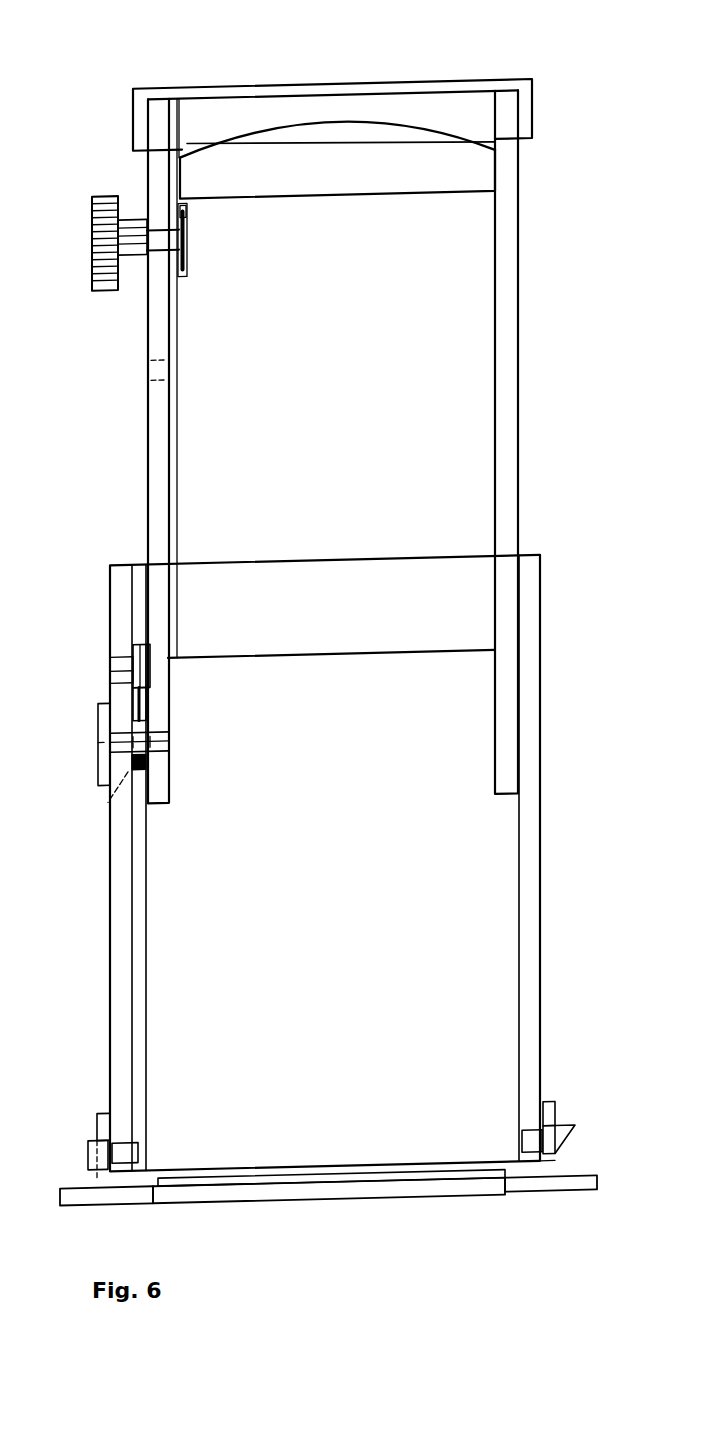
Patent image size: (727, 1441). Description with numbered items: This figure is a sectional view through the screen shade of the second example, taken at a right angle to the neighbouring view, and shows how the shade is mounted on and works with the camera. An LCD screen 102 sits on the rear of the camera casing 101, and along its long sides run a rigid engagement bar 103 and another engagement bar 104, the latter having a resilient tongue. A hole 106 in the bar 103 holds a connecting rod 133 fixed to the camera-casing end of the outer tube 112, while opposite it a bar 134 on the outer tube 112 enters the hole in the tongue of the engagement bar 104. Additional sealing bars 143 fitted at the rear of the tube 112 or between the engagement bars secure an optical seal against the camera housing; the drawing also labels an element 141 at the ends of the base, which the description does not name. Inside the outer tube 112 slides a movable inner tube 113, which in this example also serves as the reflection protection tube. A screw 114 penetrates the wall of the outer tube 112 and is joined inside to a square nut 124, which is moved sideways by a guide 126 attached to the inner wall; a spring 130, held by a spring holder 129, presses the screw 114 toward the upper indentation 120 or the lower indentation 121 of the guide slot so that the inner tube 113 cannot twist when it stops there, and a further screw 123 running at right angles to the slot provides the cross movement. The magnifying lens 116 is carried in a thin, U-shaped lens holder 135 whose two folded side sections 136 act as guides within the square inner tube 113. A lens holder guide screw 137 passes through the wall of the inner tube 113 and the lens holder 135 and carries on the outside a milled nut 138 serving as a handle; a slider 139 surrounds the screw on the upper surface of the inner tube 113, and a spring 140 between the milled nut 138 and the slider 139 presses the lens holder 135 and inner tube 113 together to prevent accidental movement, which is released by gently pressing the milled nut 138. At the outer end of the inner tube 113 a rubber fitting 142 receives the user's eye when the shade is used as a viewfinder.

The camera casing 101 is at (555, 1190).
The LCD screen 102 is at (362, 1193).
The engagement bar 103 is at (97, 1118).
The engagement bar 104 is at (557, 1105).
The hole 106 is at (90, 1138).
The outer tube 112 is at (545, 567).
The inner tube 113 is at (527, 478).
The screw 114 is at (98, 712).
The magnifying lens 116 is at (470, 168).
The upper indentation 120 is at (143, 372).
The lower indentation 121 is at (130, 752).
The screw 123 is at (125, 757).
The square nut 124 is at (130, 705).
The guide 126 is at (140, 883).
The spring holder 129 is at (105, 665).
The spring 130 is at (135, 645).
The connecting rod 133 is at (88, 1158).
The bar 134 is at (572, 1145).
The lens holder 135 is at (165, 83).
The side sections 136 is at (417, 108).
The lens holder guide screw 137 is at (178, 195).
The milled nut 138 is at (92, 209).
The slider 139 is at (147, 190).
The spring 140 is at (137, 213).
The end cap 141 is at (93, 1188).
The rubber fitting 142 is at (297, 83).
The sealing bars 143 is at (415, 1186).